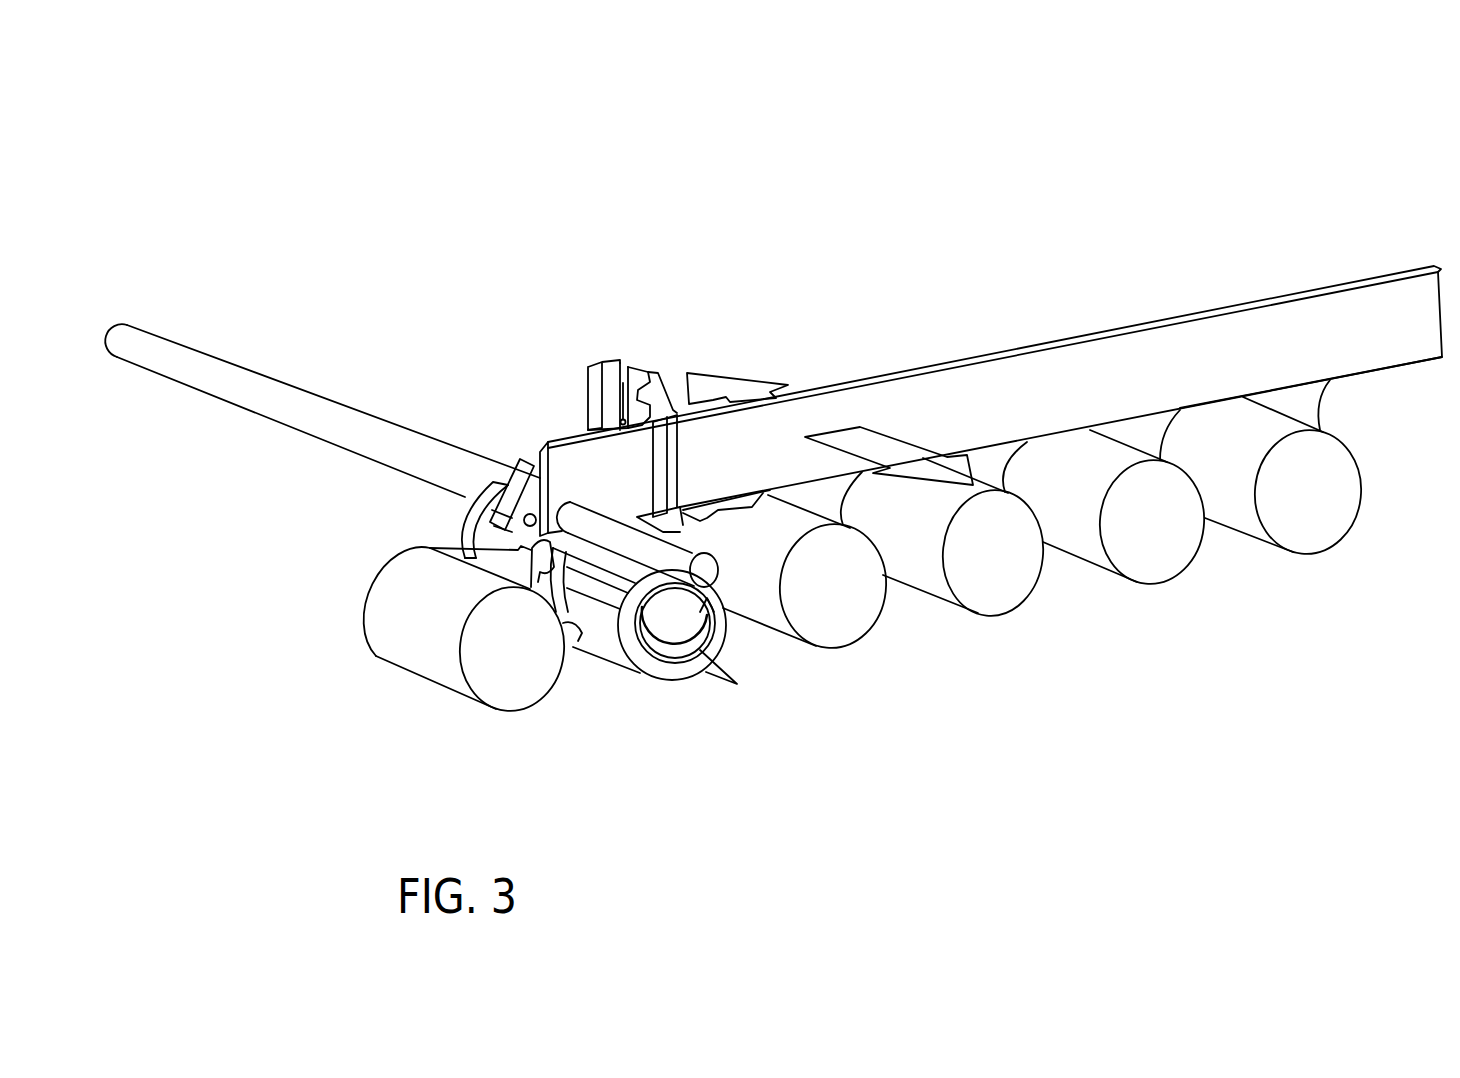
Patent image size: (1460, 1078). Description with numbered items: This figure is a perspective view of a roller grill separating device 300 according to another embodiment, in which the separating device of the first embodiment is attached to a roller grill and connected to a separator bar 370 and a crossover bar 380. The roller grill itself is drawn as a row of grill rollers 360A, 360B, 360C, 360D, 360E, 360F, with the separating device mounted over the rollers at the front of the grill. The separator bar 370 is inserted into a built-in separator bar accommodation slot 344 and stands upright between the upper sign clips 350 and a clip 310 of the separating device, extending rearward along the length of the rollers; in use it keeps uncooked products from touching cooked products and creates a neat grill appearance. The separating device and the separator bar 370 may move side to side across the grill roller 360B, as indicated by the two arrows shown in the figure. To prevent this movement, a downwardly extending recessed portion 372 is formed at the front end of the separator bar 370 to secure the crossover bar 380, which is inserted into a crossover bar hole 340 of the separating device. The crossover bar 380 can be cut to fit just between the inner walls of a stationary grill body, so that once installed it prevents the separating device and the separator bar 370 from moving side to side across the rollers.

The roller grill separating device 300 is at (847, 284).
The clip 310 is at (583, 684).
The crossover bar hole 340 is at (540, 530).
The separator bar accommodation slot 344 is at (667, 462).
The upper sign clips 350 is at (562, 359).
The grill roller 360A is at (521, 664).
The grill roller 360B is at (663, 632).
The grill roller 360C is at (847, 588).
The grill roller 360D is at (1003, 562).
The grill roller 360E is at (1172, 522).
The grill roller 360F is at (1330, 492).
The separator bar 370 is at (1215, 362).
The recessed portion 372 is at (541, 452).
The crossover bar 380 is at (170, 353).